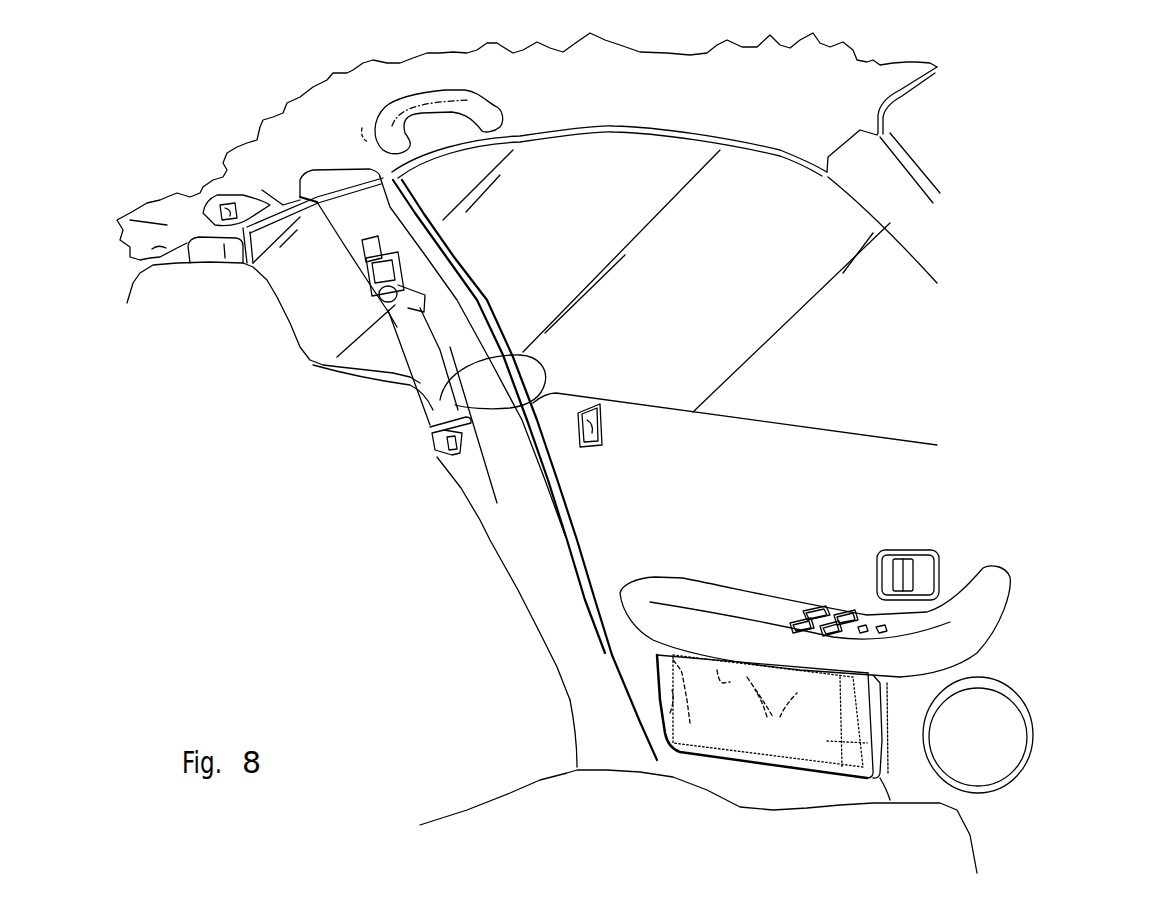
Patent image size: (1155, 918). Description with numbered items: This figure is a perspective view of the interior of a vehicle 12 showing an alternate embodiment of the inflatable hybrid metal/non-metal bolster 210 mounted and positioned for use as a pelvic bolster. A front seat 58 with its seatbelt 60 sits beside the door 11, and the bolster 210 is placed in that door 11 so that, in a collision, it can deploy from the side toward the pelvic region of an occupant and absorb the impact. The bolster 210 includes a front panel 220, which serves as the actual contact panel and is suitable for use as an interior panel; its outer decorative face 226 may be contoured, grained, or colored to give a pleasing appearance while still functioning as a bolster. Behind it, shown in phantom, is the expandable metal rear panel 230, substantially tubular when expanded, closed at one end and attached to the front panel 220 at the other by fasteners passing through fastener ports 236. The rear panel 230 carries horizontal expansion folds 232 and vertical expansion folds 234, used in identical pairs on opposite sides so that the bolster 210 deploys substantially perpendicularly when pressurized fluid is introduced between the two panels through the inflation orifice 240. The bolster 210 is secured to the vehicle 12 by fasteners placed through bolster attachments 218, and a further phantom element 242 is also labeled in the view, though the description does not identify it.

The door 11 is at (812, 500).
The vehicle 12 is at (1003, 347).
The front seat 58 is at (386, 593).
The seatbelt 60 is at (523, 353).
The inflatable bolster 210 is at (907, 712).
The bolster attachments 218 is at (813, 702).
The front panel 220 is at (907, 803).
The outer decorative face 226 is at (889, 768).
The expandable metal rear panel 230 is at (673, 660).
The horizontal expansion folds 232 is at (717, 670).
The vertical expansion folds 234 is at (670, 713).
The fastener ports 236 is at (770, 690).
The inflation orifice 240 is at (767, 717).
The compartment rear wall 242 is at (780, 717).